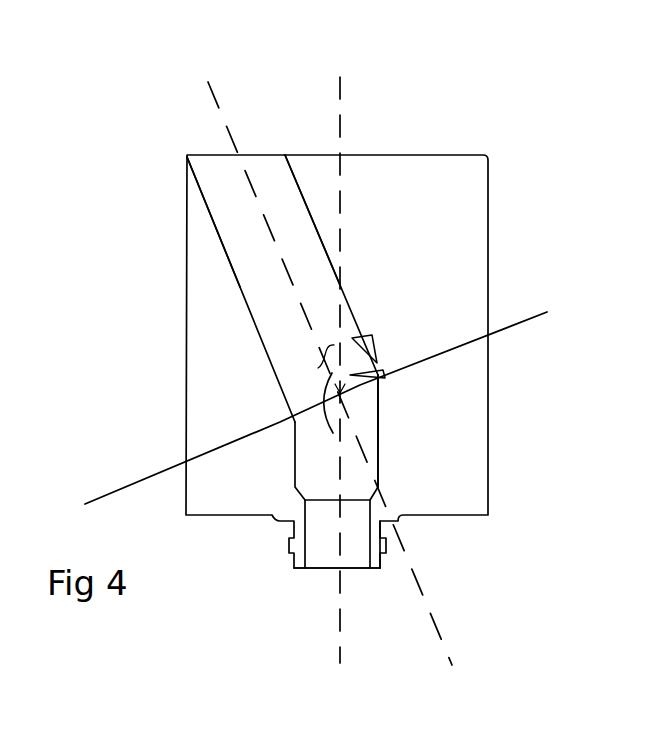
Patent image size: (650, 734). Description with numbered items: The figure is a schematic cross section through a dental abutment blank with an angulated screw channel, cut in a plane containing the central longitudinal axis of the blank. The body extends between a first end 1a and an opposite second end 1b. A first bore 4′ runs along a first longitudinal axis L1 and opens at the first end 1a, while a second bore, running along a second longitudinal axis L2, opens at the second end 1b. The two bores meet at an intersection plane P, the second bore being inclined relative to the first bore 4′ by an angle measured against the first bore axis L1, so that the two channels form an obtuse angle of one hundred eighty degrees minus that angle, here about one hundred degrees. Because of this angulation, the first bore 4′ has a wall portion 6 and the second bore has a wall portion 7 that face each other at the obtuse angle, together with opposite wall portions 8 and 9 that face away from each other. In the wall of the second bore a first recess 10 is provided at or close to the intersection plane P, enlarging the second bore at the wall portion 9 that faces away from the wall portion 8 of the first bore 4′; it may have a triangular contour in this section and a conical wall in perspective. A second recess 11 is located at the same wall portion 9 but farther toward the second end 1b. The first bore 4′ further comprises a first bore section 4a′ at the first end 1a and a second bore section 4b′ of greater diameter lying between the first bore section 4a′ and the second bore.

The first end 1a is at (298, 572).
The second end 1b is at (466, 154).
The first bore 4′ is at (358, 557).
The first bore section 4a′ is at (376, 553).
The second bore section 4b′ is at (383, 422).
The wall portion 6 is at (295, 457).
The wall portion 7 is at (237, 278).
The wall portion 8 is at (382, 443).
The wall portion 9 is at (315, 226).
The first recess 10 is at (382, 368).
The second recess 11 is at (366, 333).
The intersection plane P is at (327, 399).
The first longitudinal axis L1 is at (338, 391).
The second longitudinal axis L2 is at (318, 357).